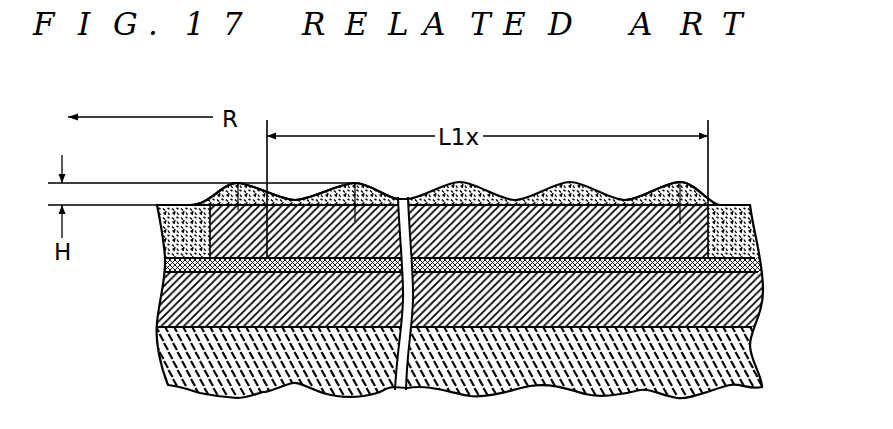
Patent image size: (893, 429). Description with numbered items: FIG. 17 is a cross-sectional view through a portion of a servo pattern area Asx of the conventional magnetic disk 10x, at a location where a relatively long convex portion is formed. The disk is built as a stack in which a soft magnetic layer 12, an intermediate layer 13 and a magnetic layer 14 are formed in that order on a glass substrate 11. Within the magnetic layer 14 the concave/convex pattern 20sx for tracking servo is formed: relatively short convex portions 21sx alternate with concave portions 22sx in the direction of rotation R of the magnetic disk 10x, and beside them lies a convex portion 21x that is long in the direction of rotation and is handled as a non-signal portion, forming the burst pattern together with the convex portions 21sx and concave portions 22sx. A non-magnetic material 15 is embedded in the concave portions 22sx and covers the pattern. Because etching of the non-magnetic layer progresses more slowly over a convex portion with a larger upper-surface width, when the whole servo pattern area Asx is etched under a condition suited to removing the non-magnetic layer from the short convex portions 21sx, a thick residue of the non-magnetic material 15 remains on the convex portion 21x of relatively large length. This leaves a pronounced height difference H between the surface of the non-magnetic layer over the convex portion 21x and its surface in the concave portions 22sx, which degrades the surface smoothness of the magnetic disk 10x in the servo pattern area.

The magnetic disk 10x is at (484, 98).
The glass substrate 11 is at (740, 360).
The soft magnetic layer 12 is at (740, 305).
The intermediate layer 13 is at (752, 267).
The magnetic layer 14 is at (712, 235).
The non-magnetic material 15 is at (462, 182).
The convex portion 21x is at (357, 182).
The convex portions 21sx is at (250, 183).
The concave portions 22sx is at (187, 216).
The concave/convex pattern 20sx is at (693, 162).